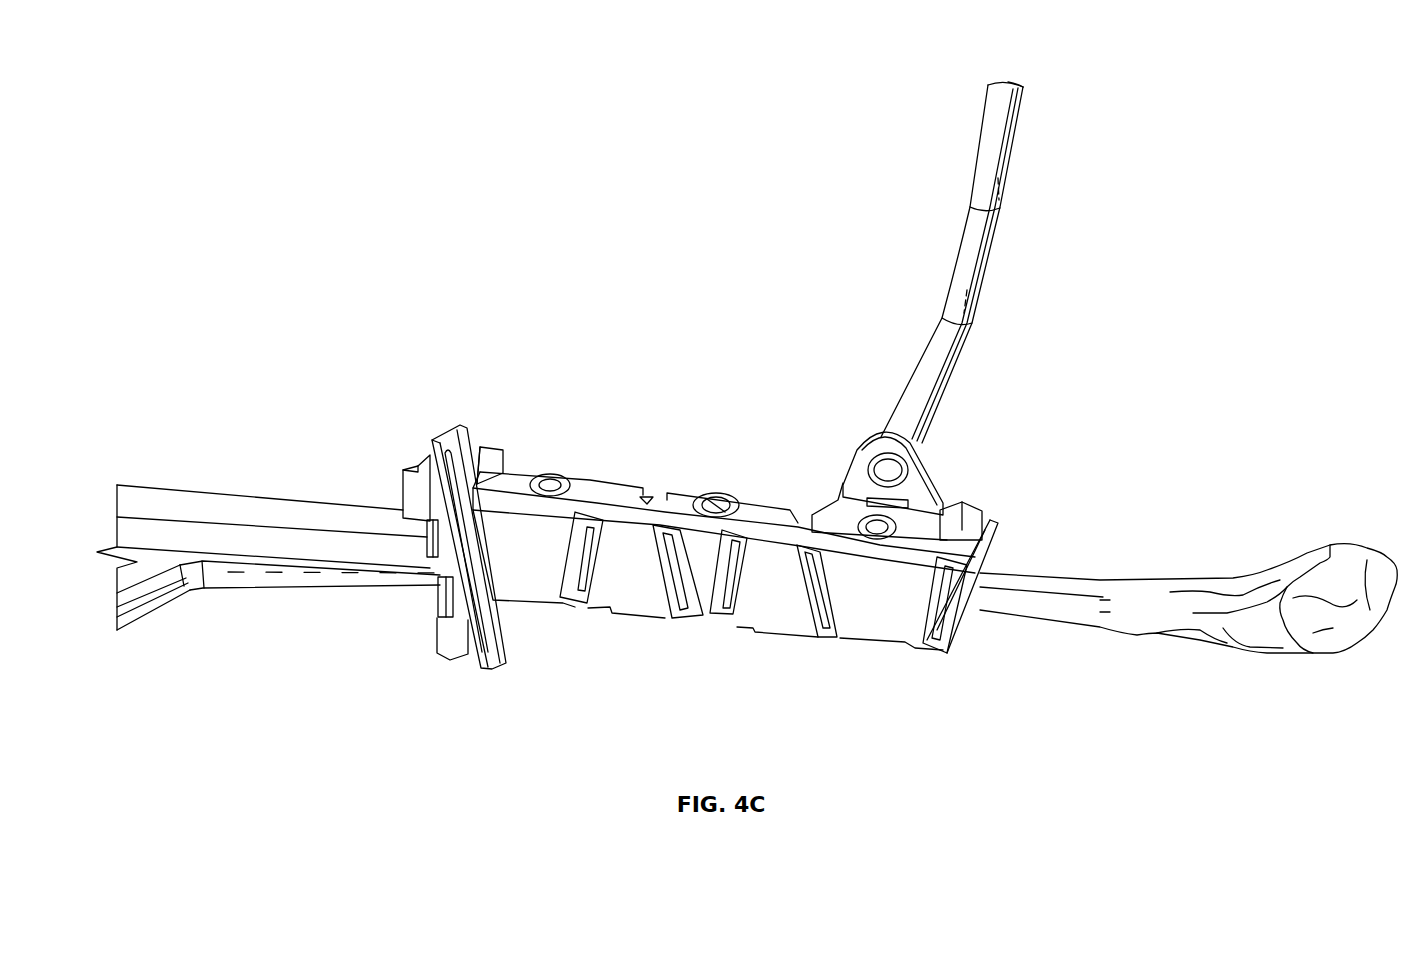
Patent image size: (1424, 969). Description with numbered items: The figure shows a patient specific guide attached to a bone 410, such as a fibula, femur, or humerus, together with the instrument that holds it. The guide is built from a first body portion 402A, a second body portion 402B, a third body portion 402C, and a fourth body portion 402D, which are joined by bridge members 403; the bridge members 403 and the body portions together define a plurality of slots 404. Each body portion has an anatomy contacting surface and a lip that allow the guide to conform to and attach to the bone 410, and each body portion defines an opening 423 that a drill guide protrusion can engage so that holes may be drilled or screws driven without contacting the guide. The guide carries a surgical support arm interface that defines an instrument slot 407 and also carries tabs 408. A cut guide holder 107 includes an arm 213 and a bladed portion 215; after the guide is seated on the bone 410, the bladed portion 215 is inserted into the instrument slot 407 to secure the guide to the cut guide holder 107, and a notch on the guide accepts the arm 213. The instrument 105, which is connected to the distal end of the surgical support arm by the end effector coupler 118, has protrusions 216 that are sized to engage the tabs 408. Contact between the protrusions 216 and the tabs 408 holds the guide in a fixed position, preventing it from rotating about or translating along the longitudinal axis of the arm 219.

The instrument 105 is at (268, 565).
The cut guide holder 107 is at (1068, 413).
The end effector coupler 118 is at (457, 426).
The arm 213 is at (963, 352).
The bladed portion 215 is at (866, 441).
The protrusions 216 is at (422, 473).
The arm 219 is at (215, 572).
The first body portion 402A is at (517, 557).
The second body portion 402B is at (637, 593).
The third body portion 402C is at (775, 607).
The fourth body portion 402D is at (875, 607).
The bridge members 403 is at (665, 513).
The slots 404 is at (582, 592).
The instrument slot 407 is at (919, 445).
The tabs 408 is at (423, 547).
The bone 410 is at (1380, 570).
The opening 423 is at (551, 474).